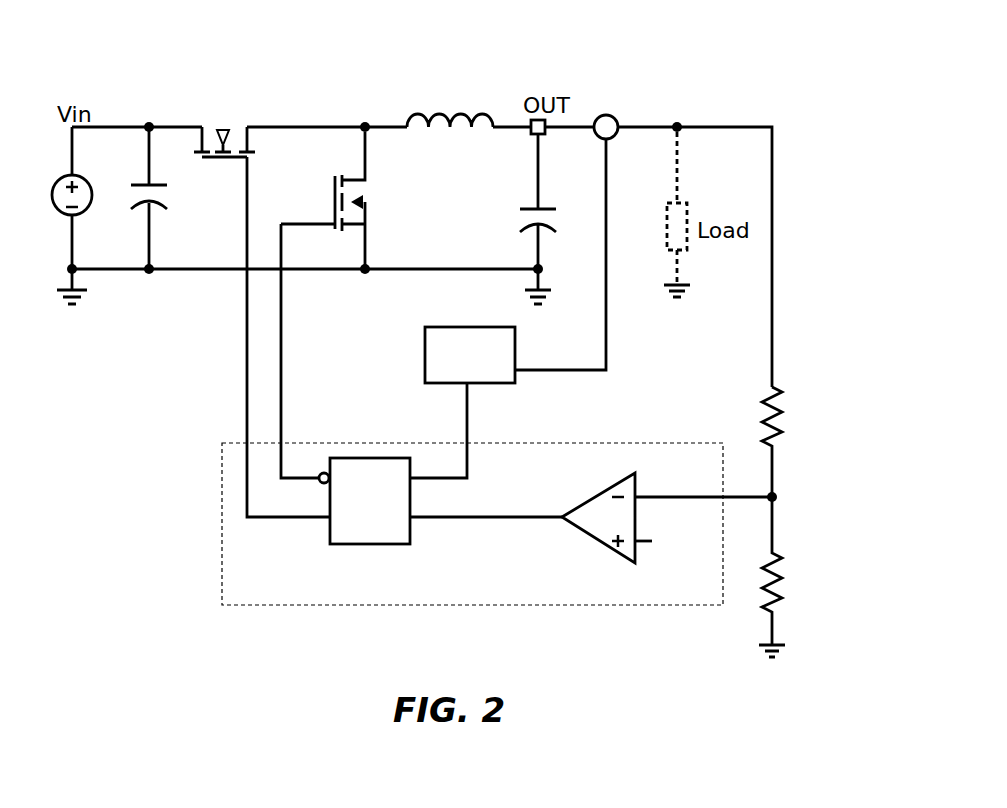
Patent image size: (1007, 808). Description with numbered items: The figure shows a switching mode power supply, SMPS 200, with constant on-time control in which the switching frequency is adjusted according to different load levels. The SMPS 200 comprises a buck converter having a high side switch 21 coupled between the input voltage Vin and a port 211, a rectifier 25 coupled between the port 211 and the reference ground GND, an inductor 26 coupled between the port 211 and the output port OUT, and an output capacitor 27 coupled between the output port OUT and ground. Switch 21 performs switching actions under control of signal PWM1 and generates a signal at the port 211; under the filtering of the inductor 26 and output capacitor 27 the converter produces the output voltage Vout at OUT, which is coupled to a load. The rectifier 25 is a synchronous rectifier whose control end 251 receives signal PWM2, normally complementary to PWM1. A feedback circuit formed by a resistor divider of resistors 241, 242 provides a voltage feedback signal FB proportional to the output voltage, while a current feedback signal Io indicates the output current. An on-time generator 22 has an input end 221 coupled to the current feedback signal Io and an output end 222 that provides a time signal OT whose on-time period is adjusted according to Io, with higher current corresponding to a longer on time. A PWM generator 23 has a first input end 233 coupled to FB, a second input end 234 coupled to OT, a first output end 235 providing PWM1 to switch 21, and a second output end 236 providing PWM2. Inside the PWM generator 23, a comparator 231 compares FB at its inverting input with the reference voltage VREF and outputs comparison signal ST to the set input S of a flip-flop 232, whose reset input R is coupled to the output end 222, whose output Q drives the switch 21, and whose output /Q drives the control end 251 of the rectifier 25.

The SMPS 200 is at (771, 96).
The high side switch 21 is at (226, 125).
The port 211 is at (246, 160).
The rectifier 25 is at (371, 198).
The control end of synchronous rectifier 251 is at (335, 229).
The inductor 26 is at (454, 112).
The output capacitor 27 is at (514, 214).
The on-time generator 22 is at (424, 356).
The input end 221 is at (517, 384).
The output end 222 is at (464, 390).
The PWM generator 23 is at (472, 524).
The comparator 231 is at (595, 497).
The flip-flop 232 is at (376, 545).
The first input end 233 is at (725, 500).
The second input end 234 is at (472, 443).
The first output end 235 is at (244, 443).
The second output end 236 is at (282, 443).
The resistor 241 is at (783, 410).
The resistor 242 is at (783, 578).